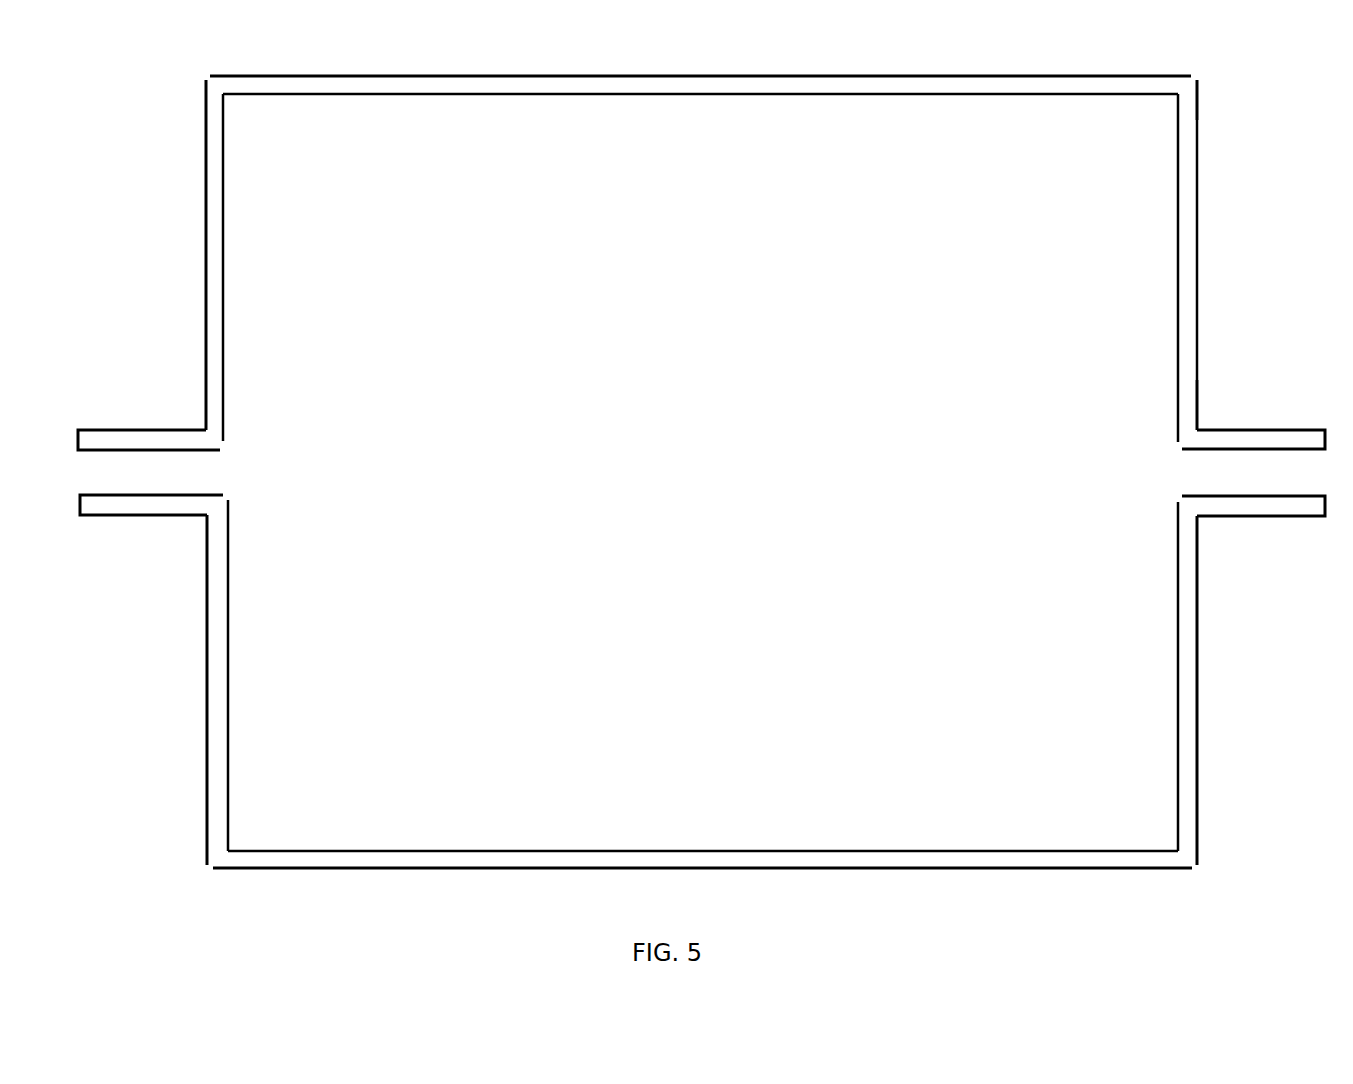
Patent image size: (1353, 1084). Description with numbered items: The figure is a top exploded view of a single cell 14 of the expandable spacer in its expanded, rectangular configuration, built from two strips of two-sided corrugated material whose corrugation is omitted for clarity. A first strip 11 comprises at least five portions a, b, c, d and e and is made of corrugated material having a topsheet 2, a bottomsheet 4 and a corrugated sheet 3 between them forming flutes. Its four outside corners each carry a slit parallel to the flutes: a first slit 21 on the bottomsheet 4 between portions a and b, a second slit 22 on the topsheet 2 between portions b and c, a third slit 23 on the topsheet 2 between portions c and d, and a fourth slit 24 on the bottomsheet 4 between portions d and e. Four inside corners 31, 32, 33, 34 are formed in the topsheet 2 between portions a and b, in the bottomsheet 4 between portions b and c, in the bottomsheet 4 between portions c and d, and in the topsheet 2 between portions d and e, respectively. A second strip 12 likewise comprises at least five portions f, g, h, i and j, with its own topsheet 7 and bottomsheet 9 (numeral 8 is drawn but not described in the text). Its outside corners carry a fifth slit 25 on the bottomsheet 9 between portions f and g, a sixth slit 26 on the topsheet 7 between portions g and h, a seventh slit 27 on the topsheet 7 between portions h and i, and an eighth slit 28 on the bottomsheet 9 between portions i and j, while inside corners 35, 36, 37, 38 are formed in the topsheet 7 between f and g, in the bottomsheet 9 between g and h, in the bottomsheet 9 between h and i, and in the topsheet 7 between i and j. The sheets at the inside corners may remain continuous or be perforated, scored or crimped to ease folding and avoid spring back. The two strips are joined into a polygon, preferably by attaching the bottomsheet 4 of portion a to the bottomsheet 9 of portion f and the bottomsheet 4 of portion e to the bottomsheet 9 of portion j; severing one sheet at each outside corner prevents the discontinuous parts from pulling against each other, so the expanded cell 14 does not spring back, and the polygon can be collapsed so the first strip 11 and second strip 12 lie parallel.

The topsheet 2 is at (206, 157).
The corrugated sheet 3 is at (217, 220).
The bottomsheet 4 is at (223, 181).
The topsheet 7 is at (207, 727).
The outer surface of lower left wall 8 is at (217, 792).
The bottomsheet 9 is at (228, 752).
The first strip 11 is at (973, 76).
The second strip 12 is at (1018, 869).
The cell 14 is at (1098, 232).
The first slit 21 is at (231, 450).
The second slit 22 is at (202, 73).
The third slit 23 is at (1203, 75).
The fourth slit 24 is at (1168, 450).
The fifth slit 25 is at (232, 488).
The sixth slit 26 is at (198, 872).
The seventh slit 27 is at (1203, 870).
The eighth slit 28 is at (1172, 494).
The inside corner 31 is at (198, 414).
The inside corner 32 is at (237, 99).
The inside corner 33 is at (1162, 102).
The inside corner 34 is at (1206, 420).
The inside corner 35 is at (195, 527).
The inside corner 36 is at (242, 846).
The inside corner 37 is at (1168, 842).
The inside corner 38 is at (1213, 530).
The portion a is at (138, 430).
The portion b is at (228, 302).
The portion c is at (745, 95).
The portion d is at (1177, 258).
The portion e is at (1285, 430).
The portion f is at (125, 515).
The portion g is at (228, 607).
The portion h is at (725, 850).
The portion i is at (1177, 661).
The portion j is at (1283, 516).